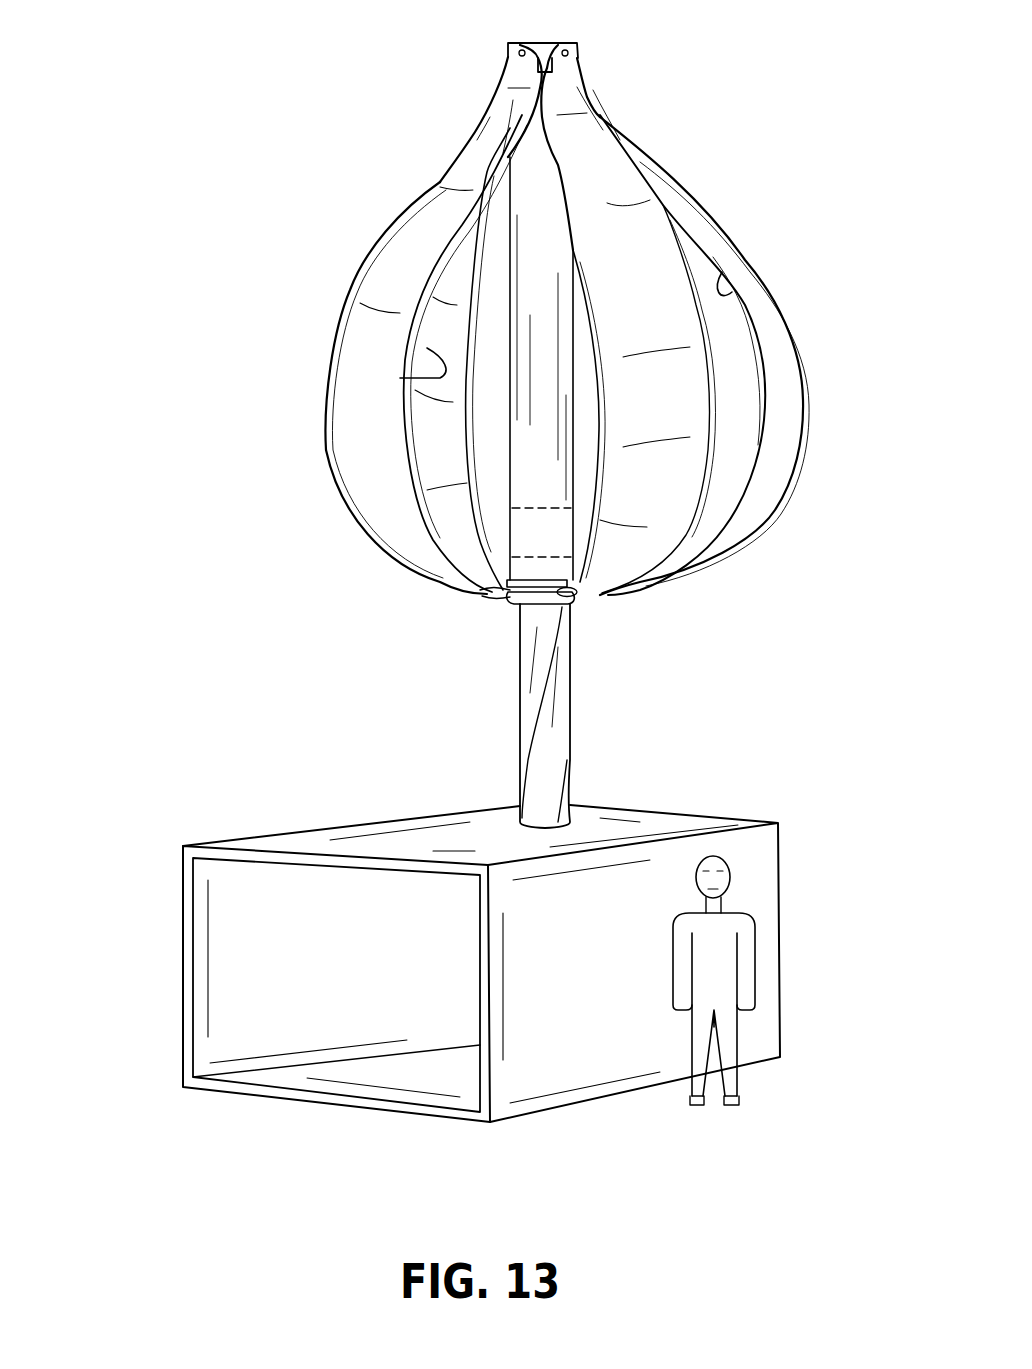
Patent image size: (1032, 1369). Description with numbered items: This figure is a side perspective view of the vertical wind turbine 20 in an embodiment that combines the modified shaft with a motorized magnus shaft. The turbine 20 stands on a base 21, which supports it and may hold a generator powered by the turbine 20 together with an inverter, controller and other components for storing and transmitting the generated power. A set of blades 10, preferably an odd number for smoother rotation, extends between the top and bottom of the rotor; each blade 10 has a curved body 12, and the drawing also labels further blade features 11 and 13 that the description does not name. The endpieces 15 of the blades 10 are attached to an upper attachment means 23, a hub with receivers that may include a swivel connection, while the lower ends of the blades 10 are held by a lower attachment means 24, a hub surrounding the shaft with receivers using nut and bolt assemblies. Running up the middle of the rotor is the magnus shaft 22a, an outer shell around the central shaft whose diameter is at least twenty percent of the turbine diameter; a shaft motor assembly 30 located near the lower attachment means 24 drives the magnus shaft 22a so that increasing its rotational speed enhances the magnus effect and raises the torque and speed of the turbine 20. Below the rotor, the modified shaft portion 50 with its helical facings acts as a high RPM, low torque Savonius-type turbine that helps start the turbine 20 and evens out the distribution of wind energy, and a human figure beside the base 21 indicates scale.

The vertical wind turbine 20 is at (192, 192).
The blade 10 is at (336, 192).
The lobe edge 11 is at (354, 273).
The body 12 is at (367, 440).
The seam 13 is at (400, 378).
The endpiece 15 is at (507, 47).
The upper attachment means 23 is at (548, 48).
The magnus shaft 22a is at (533, 473).
The shaft motor assembly 30 is at (533, 530).
The lower attachment means 24 is at (580, 597).
The modified shaft portion 50 is at (612, 693).
The base 21 is at (575, 998).